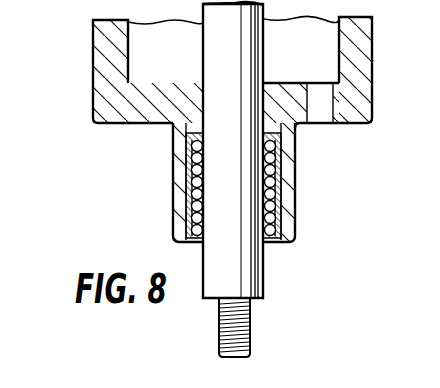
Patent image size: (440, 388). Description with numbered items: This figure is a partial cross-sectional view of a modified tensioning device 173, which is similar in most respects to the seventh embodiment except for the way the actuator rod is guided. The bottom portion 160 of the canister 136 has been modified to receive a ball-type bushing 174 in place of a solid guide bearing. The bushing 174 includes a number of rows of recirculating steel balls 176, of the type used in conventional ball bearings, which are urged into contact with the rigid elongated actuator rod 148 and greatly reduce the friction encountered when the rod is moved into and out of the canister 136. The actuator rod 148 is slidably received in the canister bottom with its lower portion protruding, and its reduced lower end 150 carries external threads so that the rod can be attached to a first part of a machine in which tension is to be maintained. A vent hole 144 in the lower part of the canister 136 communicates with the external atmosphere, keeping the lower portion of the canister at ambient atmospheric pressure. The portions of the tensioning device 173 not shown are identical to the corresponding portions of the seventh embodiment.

The canister 136 is at (78, 108).
The vent hole 144 is at (322, 112).
The actuator rod 148 is at (233, 48).
The reduced lower end 150 is at (250, 318).
The bottom portion 160 is at (362, 61).
The tensioning device 173 is at (308, 215).
The ball-type bushing 174 is at (280, 185).
The recirculating steel balls 176 is at (189, 181).